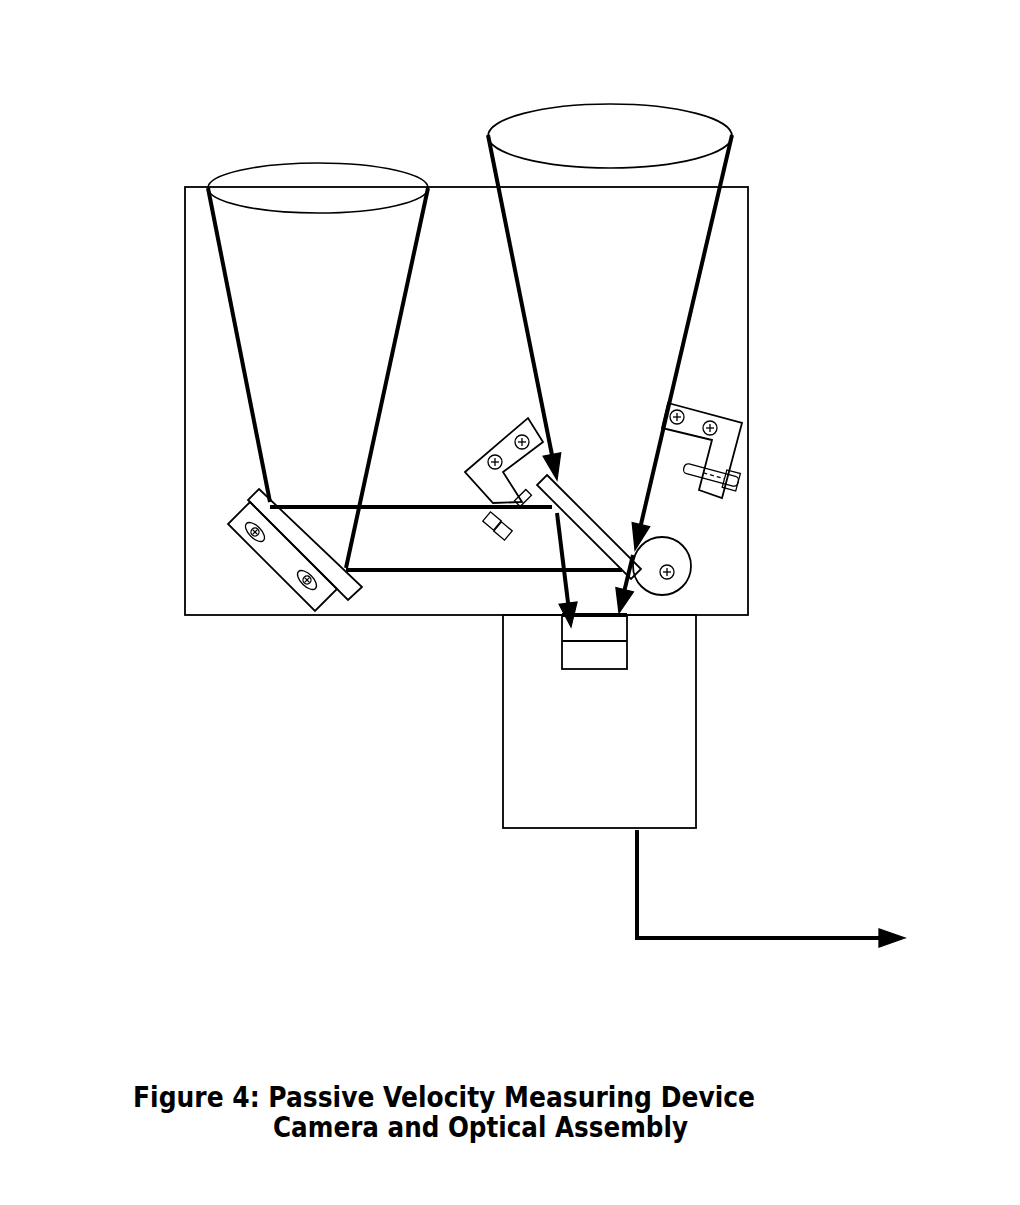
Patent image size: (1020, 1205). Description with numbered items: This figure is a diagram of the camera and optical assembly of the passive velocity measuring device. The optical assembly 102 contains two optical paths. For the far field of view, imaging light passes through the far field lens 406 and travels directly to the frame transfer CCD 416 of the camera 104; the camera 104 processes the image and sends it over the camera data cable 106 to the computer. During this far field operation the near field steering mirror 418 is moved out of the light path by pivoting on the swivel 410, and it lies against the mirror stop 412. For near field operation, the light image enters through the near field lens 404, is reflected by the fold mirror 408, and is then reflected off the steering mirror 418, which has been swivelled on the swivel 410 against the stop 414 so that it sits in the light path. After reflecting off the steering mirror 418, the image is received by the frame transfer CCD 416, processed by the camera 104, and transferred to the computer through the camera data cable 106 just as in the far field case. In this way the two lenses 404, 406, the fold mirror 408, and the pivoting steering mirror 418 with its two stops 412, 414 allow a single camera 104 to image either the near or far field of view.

The optical assembly 102 is at (160, 265).
The camera 104 is at (479, 771).
The camera data cable 106 is at (739, 915).
The near field lens 404 is at (301, 150).
The far field lens 406 is at (649, 92).
The fold mirror 408 is at (223, 550).
The swivel 410 is at (718, 559).
The mirror stop 412 is at (762, 458).
The stop 414 is at (458, 494).
The frame transfer CCD 416 is at (657, 642).
The near field steering mirror 418 is at (613, 508).